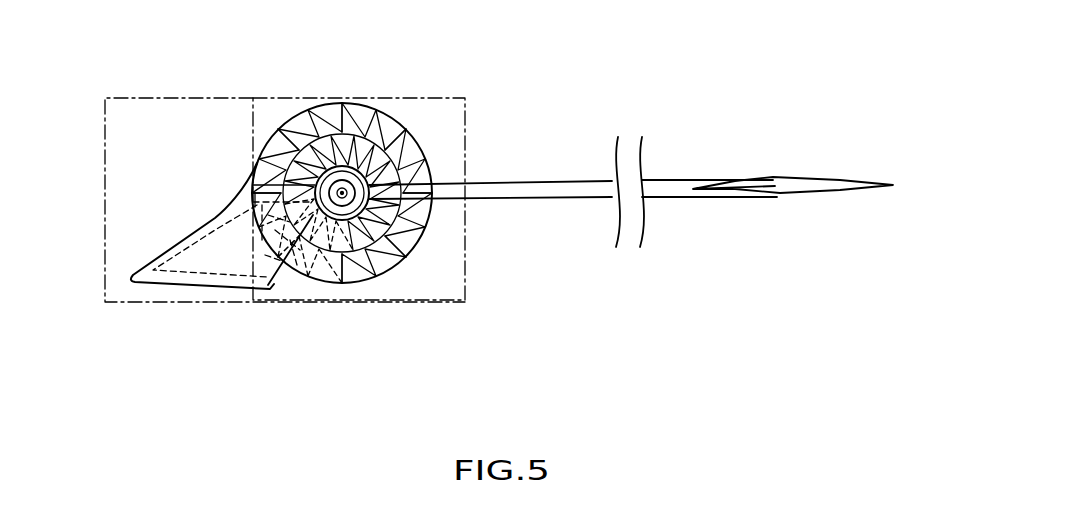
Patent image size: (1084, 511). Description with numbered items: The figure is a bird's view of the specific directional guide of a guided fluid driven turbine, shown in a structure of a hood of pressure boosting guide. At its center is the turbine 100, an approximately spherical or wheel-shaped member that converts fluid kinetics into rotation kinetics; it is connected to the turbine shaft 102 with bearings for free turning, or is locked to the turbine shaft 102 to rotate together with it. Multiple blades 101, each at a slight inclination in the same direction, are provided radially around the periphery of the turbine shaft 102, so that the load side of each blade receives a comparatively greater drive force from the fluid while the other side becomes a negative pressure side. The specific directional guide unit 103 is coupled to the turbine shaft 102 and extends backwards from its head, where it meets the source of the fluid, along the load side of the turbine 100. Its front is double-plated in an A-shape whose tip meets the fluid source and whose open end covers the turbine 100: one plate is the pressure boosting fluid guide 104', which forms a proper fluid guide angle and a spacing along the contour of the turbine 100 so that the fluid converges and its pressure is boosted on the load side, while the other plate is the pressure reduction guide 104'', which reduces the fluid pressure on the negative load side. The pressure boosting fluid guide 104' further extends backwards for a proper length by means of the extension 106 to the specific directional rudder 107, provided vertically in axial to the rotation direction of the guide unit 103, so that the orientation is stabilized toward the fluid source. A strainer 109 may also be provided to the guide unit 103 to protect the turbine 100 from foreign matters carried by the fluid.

The turbine 100 is at (287, 98).
The blades 101 is at (343, 210).
The turbine shaft 102 is at (342, 193).
The specific directional guide unit 103 is at (127, 302).
The pressure boosting fluid guide 104' is at (202, 153).
The pressure reduction guide 104'' is at (246, 293).
The extension 106 is at (573, 192).
The specific directional rudder 107 is at (784, 192).
The strainer 109 is at (370, 115).